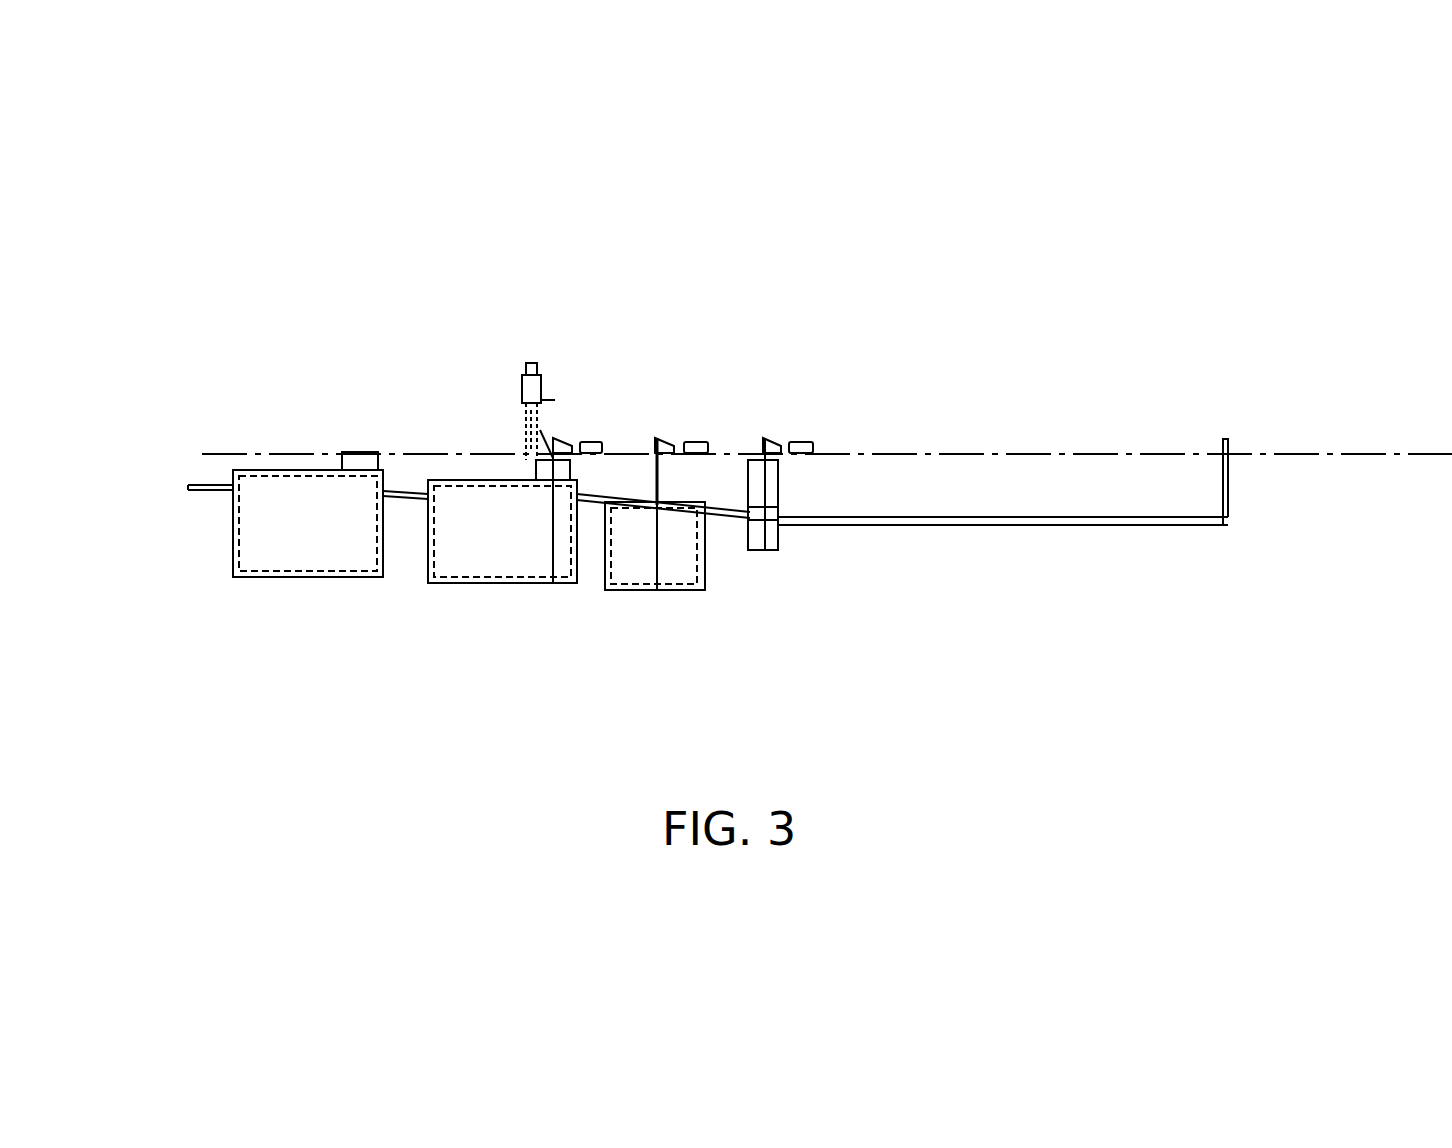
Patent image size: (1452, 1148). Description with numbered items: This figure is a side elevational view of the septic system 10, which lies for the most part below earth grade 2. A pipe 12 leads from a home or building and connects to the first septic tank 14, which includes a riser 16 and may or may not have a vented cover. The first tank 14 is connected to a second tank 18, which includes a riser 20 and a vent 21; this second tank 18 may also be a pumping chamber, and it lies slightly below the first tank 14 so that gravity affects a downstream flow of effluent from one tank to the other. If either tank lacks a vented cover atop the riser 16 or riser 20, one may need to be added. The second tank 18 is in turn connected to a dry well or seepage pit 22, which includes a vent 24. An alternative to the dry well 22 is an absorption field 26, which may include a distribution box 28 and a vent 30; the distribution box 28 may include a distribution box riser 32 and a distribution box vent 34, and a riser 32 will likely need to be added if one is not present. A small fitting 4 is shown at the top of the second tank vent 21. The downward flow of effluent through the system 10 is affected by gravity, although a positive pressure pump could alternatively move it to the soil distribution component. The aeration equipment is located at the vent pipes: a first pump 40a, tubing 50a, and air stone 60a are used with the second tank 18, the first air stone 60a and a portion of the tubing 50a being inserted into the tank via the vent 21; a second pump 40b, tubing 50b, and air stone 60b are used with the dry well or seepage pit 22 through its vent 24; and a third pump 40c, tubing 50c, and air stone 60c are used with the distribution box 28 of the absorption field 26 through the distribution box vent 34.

The earth grade 2 is at (1058, 453).
The valve 4 is at (530, 361).
The septic system 10 is at (307, 640).
The pipe 12 is at (195, 481).
The first septic tank 14 is at (287, 525).
The riser 16 is at (359, 452).
The second tank 18 is at (478, 545).
The riser 20 is at (534, 454).
The vent 21 is at (529, 450).
The dry well or seepage pit 22 is at (683, 567).
The vent 24 is at (651, 440).
The absorption field 26 is at (1058, 527).
The distribution box 28 is at (786, 541).
The vent 30 is at (1234, 462).
The distribution box riser 32 is at (780, 485).
The distribution box vent 34 is at (759, 441).
The first pump 40a is at (590, 441).
The second pump 40b is at (702, 441).
The third pump 40c is at (813, 441).
The tubing 50a is at (567, 437).
The tubing 50b is at (672, 437).
The tubing 50c is at (785, 438).
The air stone 60a is at (547, 584).
The air stone 60b is at (647, 593).
The air stone 60c is at (762, 552).